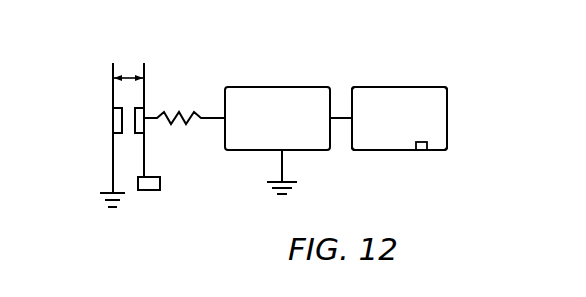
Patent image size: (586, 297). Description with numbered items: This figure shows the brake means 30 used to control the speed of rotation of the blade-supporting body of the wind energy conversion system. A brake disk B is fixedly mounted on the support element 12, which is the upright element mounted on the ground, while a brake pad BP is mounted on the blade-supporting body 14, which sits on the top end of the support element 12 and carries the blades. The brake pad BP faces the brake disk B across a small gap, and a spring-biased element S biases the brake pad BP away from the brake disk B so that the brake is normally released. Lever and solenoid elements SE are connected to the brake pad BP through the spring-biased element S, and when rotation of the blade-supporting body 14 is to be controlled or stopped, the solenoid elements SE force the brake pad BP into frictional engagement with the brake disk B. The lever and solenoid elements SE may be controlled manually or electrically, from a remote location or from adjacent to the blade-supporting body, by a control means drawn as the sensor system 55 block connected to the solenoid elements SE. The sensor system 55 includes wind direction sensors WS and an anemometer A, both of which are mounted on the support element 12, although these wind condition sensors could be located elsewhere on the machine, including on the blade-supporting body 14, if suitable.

The brake disk B is at (113, 105).
The support element 12 is at (113, 125).
The brake pad BP is at (144, 103).
The blade-supporting body 14 is at (160, 182).
The spring-biased element S is at (184, 106).
The lever and solenoid elements SE is at (253, 97).
The brake means 30 is at (350, 60).
The sensor system 55 is at (375, 92).
The wind direction sensors WS is at (430, 93).
The anemometer A is at (420, 150).